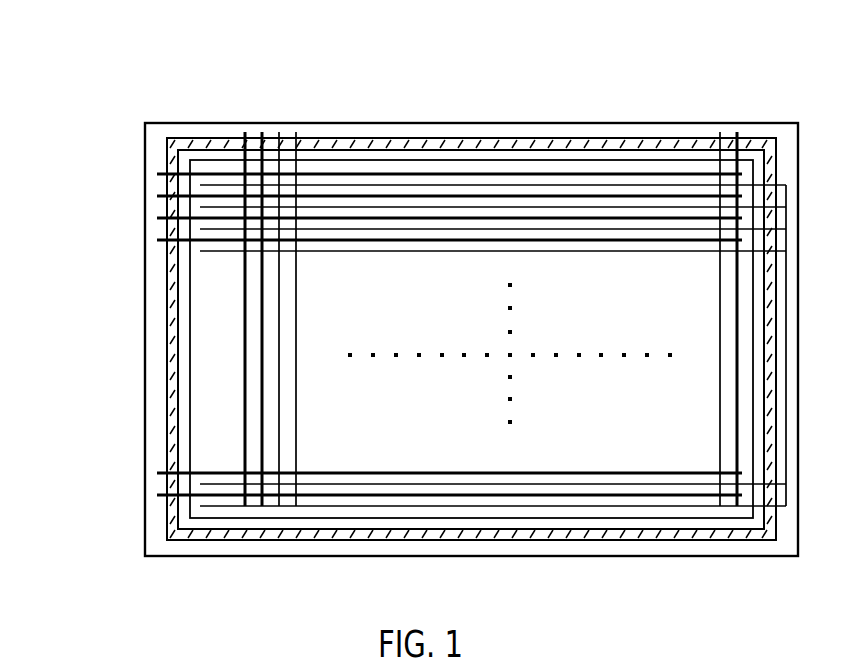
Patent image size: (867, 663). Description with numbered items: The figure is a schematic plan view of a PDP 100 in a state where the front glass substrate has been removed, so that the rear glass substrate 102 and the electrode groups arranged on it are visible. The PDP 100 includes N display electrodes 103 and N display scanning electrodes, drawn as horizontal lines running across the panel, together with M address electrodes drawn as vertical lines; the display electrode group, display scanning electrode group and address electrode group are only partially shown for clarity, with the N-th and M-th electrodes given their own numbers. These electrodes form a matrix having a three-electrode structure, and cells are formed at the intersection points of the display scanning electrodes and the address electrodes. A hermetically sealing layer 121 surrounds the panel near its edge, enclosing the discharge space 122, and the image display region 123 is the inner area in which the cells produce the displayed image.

The PDP 100 is at (422, 55).
The rear glass substrate 102 is at (780, 123).
The display electrodes 103 is at (210, 250).
The hermetically sealing layer 121 is at (503, 140).
The discharge space 122 is at (602, 277).
The image display region 123 is at (182, 373).